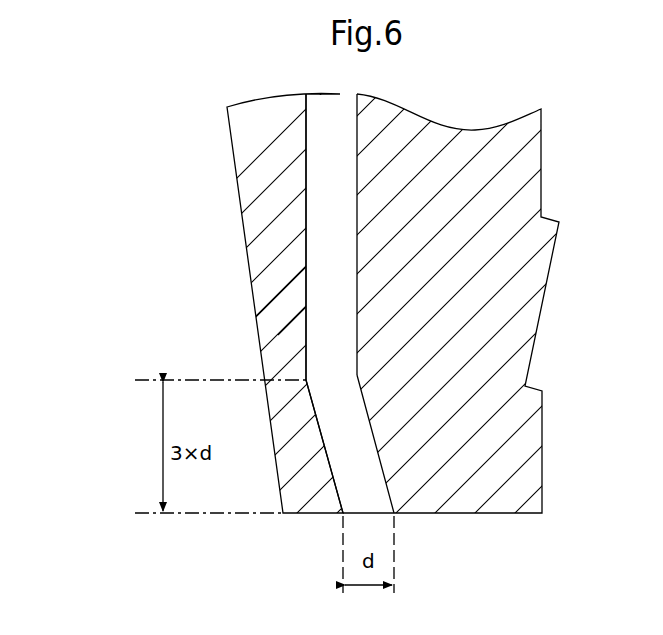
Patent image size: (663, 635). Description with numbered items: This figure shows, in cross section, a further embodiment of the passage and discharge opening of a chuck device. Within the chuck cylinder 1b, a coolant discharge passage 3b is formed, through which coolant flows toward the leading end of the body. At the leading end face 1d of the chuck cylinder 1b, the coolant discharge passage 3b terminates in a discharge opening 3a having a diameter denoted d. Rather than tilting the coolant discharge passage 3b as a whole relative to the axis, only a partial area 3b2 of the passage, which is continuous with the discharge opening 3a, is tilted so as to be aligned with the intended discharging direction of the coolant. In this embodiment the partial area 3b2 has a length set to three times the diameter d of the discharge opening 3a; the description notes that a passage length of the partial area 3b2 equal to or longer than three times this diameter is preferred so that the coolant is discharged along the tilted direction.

The chuck cylinder 1b is at (245, 152).
The leading end face 1d is at (500, 514).
The coolant discharge passage 3b is at (327, 261).
The partial area 3b2 is at (352, 435).
The discharge opening 3a is at (392, 514).